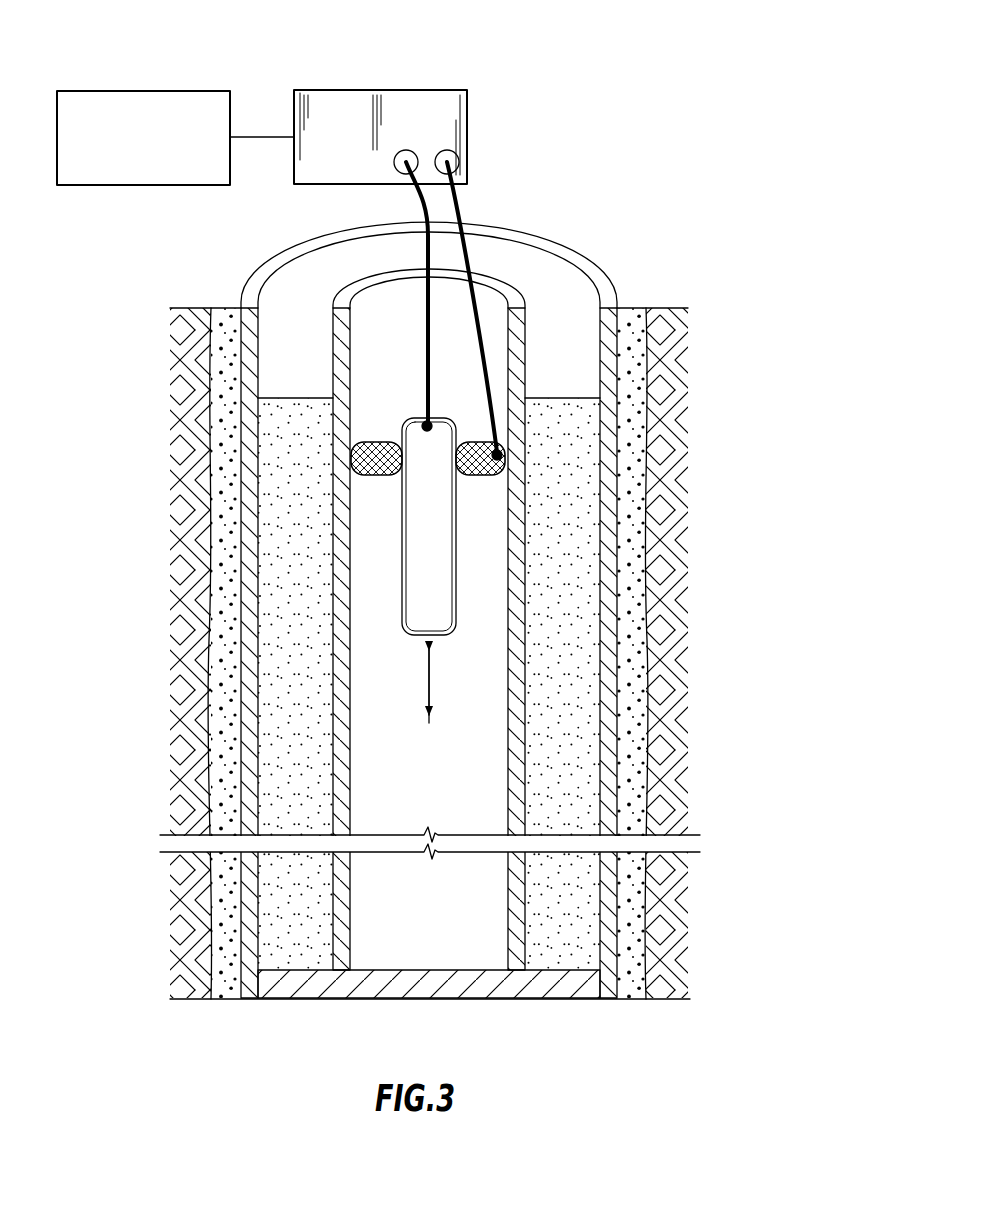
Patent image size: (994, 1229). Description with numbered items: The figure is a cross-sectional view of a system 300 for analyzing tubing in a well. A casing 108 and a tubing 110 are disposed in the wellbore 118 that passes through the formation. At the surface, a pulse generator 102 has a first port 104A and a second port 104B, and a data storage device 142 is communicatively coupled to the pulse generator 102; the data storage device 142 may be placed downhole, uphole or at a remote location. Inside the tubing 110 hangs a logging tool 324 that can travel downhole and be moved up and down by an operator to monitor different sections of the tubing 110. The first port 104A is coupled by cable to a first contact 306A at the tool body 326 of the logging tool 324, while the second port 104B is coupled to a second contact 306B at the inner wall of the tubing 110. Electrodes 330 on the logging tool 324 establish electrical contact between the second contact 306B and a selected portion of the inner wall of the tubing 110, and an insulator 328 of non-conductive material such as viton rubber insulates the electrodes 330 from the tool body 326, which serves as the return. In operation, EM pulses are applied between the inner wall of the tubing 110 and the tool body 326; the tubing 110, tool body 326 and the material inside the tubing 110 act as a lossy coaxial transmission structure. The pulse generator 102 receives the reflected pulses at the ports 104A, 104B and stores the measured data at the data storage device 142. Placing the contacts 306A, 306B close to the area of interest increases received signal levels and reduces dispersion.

The system 300 is at (740, 102).
The pulse generator 102 is at (468, 110).
The first port 104A is at (409, 150).
The second port 104B is at (441, 150).
The data storage device 142 is at (160, 152).
The casing 108 is at (608, 435).
The tubing 110 is at (522, 476).
The wellbore 118 is at (237, 675).
The first contact 306A is at (427, 422).
The second contact 306B is at (497, 444).
The logging tool 324 is at (462, 590).
The tool body 326 is at (402, 592).
The insulator 328 is at (388, 442).
The electrodes 330 is at (351, 458).